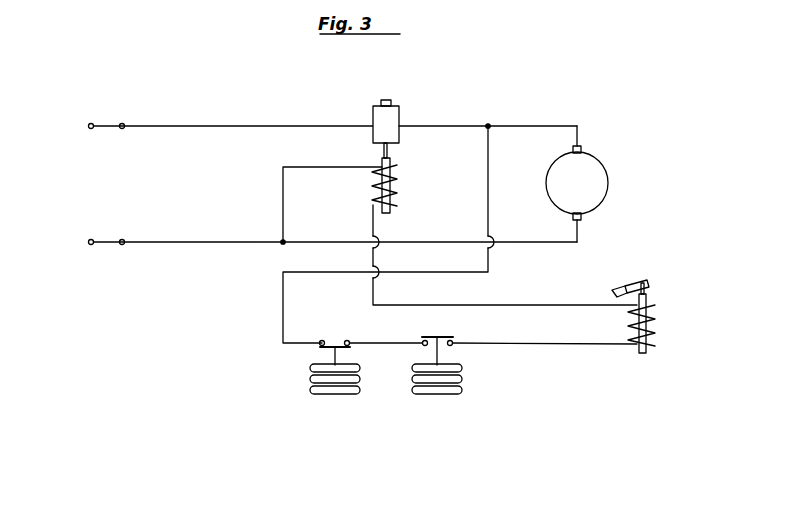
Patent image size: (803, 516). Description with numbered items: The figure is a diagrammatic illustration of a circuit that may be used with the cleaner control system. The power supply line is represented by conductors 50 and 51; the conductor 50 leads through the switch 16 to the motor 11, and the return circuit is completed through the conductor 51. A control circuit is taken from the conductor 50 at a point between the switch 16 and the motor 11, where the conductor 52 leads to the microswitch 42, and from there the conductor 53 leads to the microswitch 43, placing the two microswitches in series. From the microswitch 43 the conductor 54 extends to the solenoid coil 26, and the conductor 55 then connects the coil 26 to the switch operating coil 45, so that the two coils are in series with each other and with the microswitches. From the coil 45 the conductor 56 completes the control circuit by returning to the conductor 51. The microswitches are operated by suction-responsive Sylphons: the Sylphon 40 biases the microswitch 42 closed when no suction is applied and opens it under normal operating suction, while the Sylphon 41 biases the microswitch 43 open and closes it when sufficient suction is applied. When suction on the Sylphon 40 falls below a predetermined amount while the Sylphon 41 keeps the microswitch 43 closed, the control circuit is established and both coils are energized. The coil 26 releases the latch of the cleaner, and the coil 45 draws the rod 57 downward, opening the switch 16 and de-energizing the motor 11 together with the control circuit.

The motor 11 is at (592, 170).
The switch 16 is at (390, 113).
The solenoid coil 26 is at (652, 309).
The Sylphon 40 is at (310, 390).
The Sylphon 41 is at (412, 390).
The microswitch 42 is at (331, 343).
The microswitch 43 is at (438, 336).
The switch operating coil 45 is at (393, 187).
The conductor 50 is at (147, 126).
The conductor 51 is at (148, 242).
The conductor 52 is at (490, 190).
The conductor 53 is at (372, 343).
The conductor 54 is at (517, 344).
The conductor 55 is at (515, 305).
The conductor 56 is at (283, 212).
The rod 57 is at (390, 152).